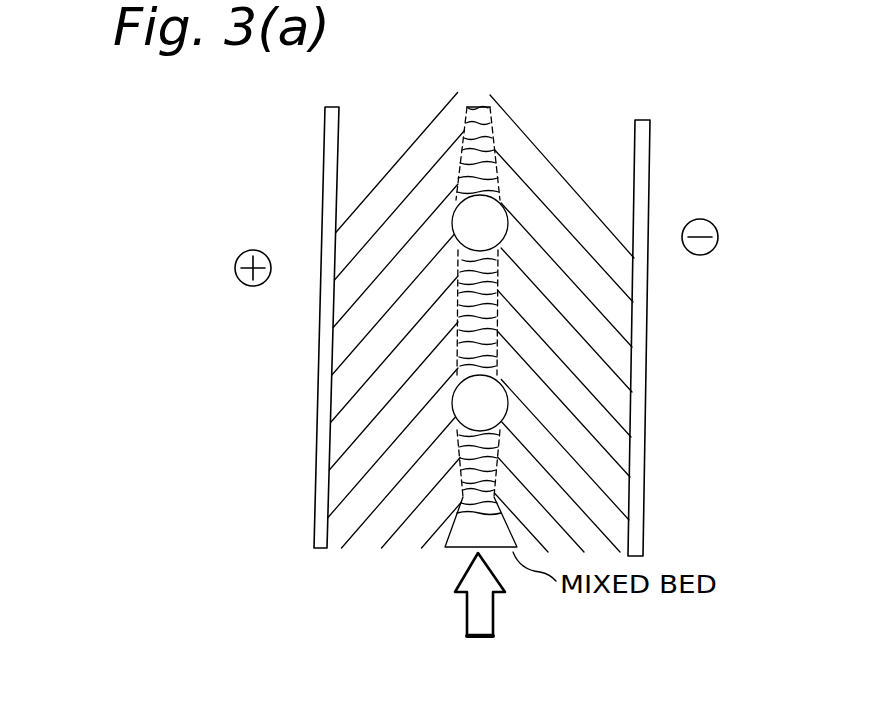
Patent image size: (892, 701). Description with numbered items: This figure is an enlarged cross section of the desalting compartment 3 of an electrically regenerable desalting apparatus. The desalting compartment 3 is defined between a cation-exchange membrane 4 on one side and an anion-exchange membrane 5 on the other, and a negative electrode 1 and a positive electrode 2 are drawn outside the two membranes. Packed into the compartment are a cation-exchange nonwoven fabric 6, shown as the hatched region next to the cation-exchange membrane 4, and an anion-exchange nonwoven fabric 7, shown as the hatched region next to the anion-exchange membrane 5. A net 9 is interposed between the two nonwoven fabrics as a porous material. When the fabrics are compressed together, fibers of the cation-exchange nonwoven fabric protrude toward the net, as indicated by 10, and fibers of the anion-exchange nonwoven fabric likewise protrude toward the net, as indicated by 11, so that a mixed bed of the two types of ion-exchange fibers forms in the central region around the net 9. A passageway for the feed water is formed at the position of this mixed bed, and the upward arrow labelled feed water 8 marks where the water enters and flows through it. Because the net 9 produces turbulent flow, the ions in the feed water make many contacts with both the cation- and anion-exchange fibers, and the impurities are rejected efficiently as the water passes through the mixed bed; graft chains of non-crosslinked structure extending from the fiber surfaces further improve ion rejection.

The negative electrode 1 is at (252, 247).
The positive electrode 2 is at (702, 218).
The desalting compartment 3 is at (328, 82).
The cation-exchange membrane 4 is at (327, 155).
The anion-exchange membrane 5 is at (645, 162).
The cation-exchange nonwoven fabric 6 is at (352, 332).
The anion-exchange nonwoven fabric 7 is at (610, 300).
The feed water inlet 8 is at (478, 622).
The net 9 is at (508, 205).
The protruding fibers of the cation-exchange nonwoven fabric 10 is at (460, 318).
The protruding fibers of the anion-exchange nonwoven fabric 11 is at (492, 318).